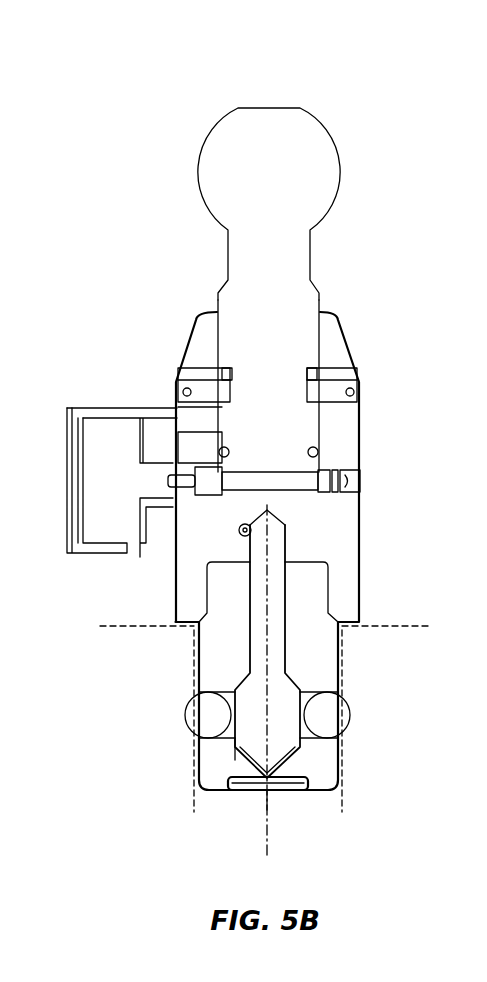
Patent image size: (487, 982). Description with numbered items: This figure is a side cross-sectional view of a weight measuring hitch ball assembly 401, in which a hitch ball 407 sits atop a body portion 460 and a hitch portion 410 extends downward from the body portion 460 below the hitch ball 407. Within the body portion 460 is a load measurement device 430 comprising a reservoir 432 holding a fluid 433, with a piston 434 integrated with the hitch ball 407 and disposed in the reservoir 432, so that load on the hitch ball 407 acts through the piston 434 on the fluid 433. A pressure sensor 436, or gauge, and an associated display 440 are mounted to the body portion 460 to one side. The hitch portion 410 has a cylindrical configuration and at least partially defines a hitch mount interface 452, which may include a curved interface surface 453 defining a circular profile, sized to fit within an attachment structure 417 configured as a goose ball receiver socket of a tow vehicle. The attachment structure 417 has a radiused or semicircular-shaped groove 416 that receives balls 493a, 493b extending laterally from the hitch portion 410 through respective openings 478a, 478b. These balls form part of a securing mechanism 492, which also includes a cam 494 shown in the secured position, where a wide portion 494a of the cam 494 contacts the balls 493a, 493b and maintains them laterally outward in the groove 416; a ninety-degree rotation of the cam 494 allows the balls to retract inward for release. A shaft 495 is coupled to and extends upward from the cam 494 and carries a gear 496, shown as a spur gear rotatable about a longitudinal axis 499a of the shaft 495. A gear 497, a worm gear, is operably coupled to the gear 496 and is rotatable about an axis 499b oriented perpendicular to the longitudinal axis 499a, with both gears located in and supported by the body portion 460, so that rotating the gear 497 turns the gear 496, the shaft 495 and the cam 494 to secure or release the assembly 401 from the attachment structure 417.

The weight measuring hitch ball assembly 401 is at (190, 57).
The hitch ball 407 is at (353, 142).
The body portion 460 is at (365, 340).
The load measurement device 430 is at (155, 370).
The pressure sensor 436 is at (115, 395).
The display 440 is at (67, 491).
The piston 434 is at (292, 463).
The fluid 433 is at (267, 493).
The reservoir 432 is at (275, 500).
The gear 496 is at (252, 528).
The gear 497 is at (238, 538).
The axis 499b is at (233, 533).
The securing mechanism 492 is at (307, 587).
The hitch mount interface 452 is at (348, 638).
The shaft 495 is at (278, 634).
The curved interface surface 453 is at (340, 662).
The groove 416 is at (348, 700).
The attachment structure 417 is at (190, 682).
The hitch portion 410 is at (188, 665).
The ball 493a is at (187, 718).
The ball 493b is at (333, 717).
The opening 478a is at (195, 738).
The opening 478b is at (340, 738).
The wide portion 494a is at (237, 737).
The cam 494 is at (295, 762).
The longitudinal axis 499a is at (265, 835).